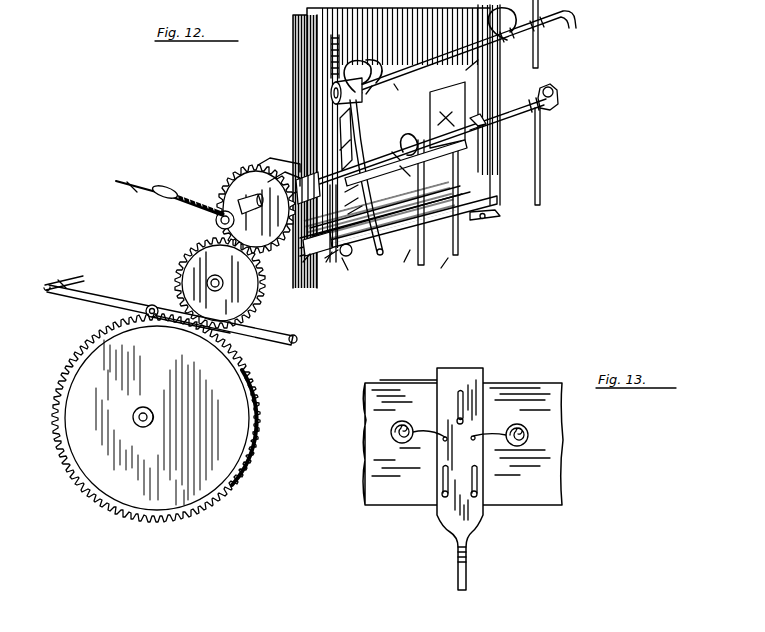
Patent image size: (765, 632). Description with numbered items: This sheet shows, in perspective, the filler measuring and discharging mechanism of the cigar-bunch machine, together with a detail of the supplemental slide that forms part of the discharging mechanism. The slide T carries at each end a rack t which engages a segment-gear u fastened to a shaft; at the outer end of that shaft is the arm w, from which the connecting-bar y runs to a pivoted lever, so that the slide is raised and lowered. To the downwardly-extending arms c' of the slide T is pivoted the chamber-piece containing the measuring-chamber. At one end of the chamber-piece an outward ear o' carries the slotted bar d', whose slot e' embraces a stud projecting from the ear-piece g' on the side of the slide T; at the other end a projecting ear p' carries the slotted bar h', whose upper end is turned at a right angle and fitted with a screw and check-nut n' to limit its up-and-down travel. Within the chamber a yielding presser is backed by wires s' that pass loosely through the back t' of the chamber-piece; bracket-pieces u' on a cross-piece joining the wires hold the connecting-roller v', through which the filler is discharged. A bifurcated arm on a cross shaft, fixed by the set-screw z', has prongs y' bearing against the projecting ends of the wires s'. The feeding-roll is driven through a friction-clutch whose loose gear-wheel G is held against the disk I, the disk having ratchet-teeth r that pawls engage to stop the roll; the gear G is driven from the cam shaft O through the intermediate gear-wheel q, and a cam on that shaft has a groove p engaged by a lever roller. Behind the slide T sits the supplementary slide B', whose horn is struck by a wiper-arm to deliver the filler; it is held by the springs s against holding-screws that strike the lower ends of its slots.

In FIG. 12, the rack t is at (340, 55).
In FIG. 12, the segment-gear u is at (430, 46).
In FIG. 12, the connecting-roller v' is at (453, 57).
In FIG. 12, the connecting-bar y is at (544, 34).
In FIG. 12, the slotted bar h' is at (480, 91).
In FIG. 12, the downwardly-extending arms c' is at (420, 148).
In FIG. 12, the back of the chamber-piece t' is at (478, 119).
In FIG. 12, the outward ear o' is at (366, 191).
In FIG. 12, the prongs y' is at (420, 211).
In FIG. 12, the check-nut n' is at (458, 217).
In FIG. 12, the bracket-pieces u' is at (416, 213).
In FIG. 12, the wires s' is at (403, 261).
In FIG. 12, the slotted bar d' is at (406, 164).
In FIG. 12, the set-screw z' is at (389, 88).
In FIG. 12, the slot e' is at (337, 139).
In FIG. 12, the ear-piece g' is at (385, 91).
In FIG. 12, the projecting ear p' is at (492, 212).
In FIG. 12, the gear-wheel G is at (246, 176).
In FIG. 12, the disk I is at (250, 199).
In FIG. 12, the intermediate gear-wheel q is at (184, 276).
In FIG. 12, the pinion J is at (216, 222).
In FIG. 12, the ratchet-teeth r is at (230, 188).
In FIG. 12, the groove p is at (163, 418).
In FIG. 12, the cam shaft O is at (153, 417).
In FIG. 12, the arm w is at (192, 466).
In FIG. 13, the slide T is at (463, 442).
In FIG. 13, the supplementary slide B' is at (460, 470).
In FIG. 13, the springs s is at (459, 428).